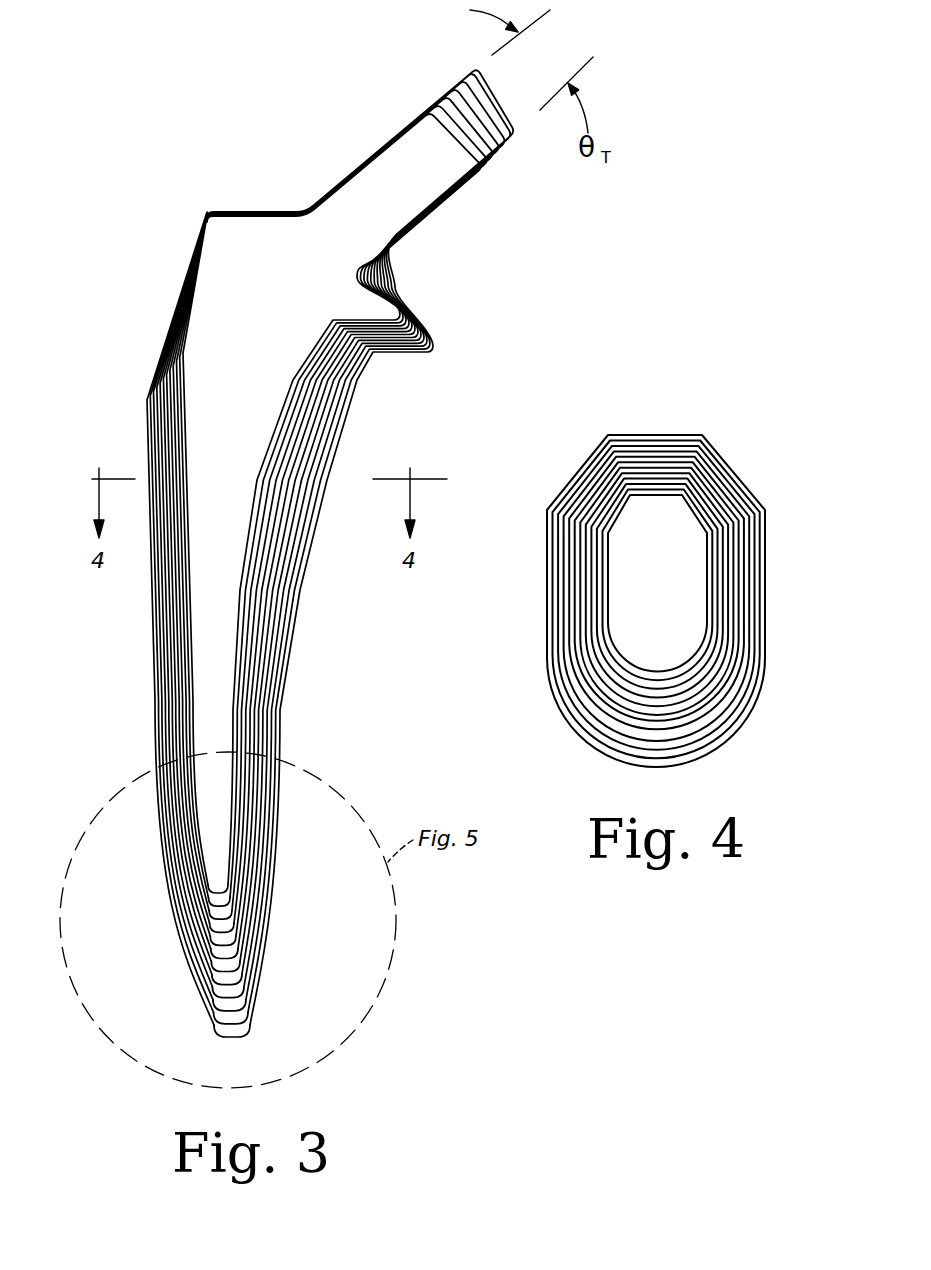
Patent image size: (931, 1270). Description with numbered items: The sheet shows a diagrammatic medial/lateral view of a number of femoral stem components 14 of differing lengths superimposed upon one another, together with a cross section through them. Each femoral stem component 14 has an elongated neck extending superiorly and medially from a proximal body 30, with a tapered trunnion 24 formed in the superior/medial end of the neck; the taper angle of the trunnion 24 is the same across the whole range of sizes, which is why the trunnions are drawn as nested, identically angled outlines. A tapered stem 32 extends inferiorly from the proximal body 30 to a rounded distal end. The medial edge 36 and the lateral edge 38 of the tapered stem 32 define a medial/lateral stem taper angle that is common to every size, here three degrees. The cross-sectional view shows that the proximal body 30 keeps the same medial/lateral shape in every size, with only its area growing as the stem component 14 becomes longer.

In FIG. 3, the femoral stem component 14 is at (252, 624).
In FIG. 4, the femoral stem component 14 is at (694, 601).
In FIG. 3, the tapered trunnion 24 is at (503, 128).
In FIG. 4, the proximal body 30 is at (677, 615).
In FIG. 3, the tapered stem 32 is at (218, 857).
In FIG. 3, the medial edge 36 is at (237, 637).
In FIG. 3, the lateral edge 38 is at (142, 643).